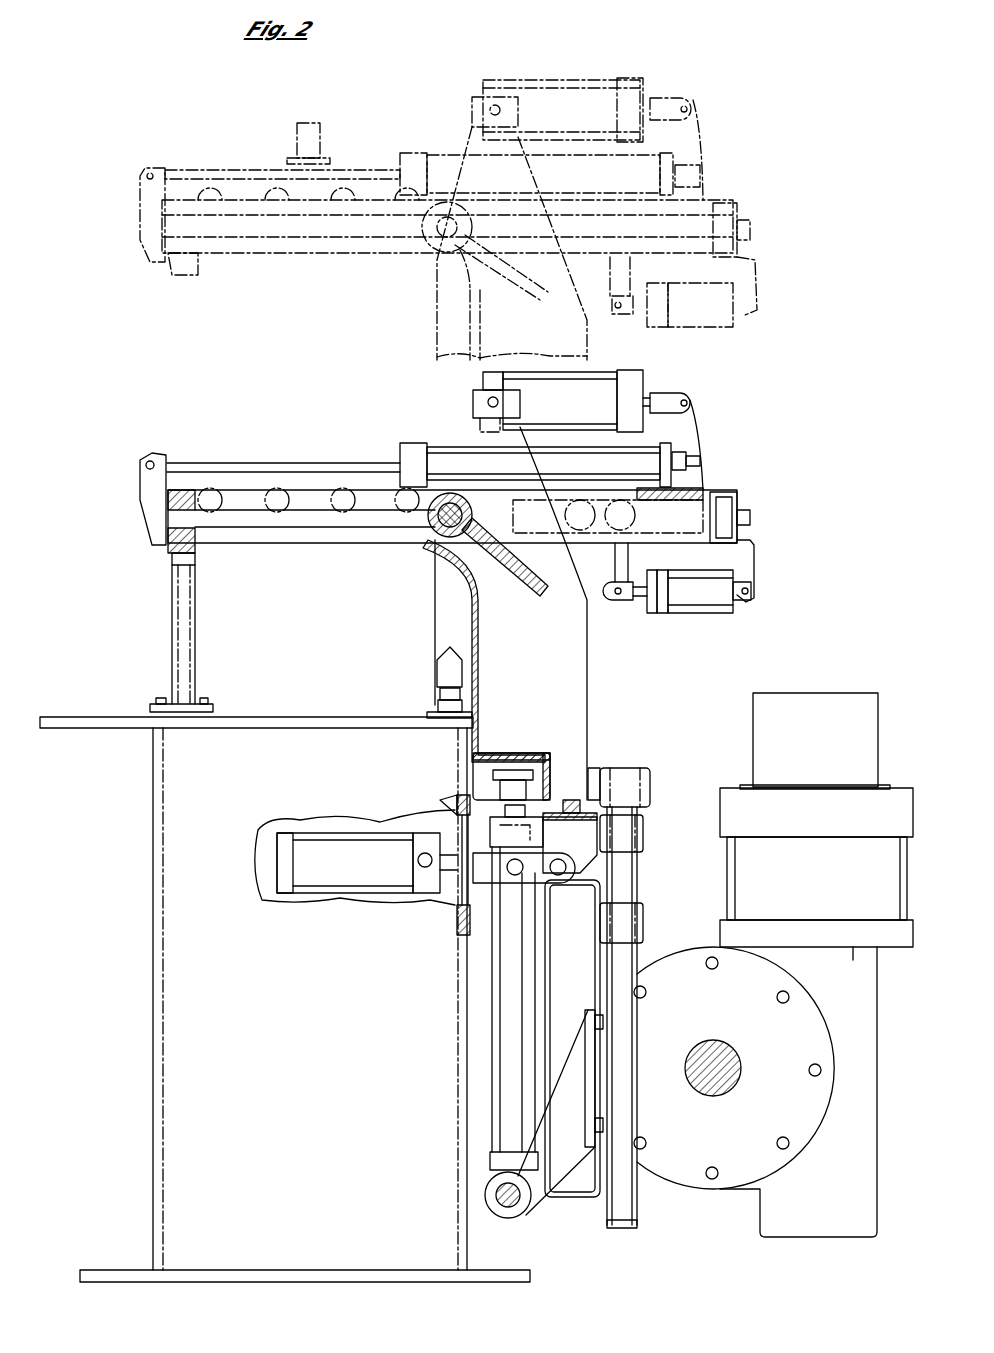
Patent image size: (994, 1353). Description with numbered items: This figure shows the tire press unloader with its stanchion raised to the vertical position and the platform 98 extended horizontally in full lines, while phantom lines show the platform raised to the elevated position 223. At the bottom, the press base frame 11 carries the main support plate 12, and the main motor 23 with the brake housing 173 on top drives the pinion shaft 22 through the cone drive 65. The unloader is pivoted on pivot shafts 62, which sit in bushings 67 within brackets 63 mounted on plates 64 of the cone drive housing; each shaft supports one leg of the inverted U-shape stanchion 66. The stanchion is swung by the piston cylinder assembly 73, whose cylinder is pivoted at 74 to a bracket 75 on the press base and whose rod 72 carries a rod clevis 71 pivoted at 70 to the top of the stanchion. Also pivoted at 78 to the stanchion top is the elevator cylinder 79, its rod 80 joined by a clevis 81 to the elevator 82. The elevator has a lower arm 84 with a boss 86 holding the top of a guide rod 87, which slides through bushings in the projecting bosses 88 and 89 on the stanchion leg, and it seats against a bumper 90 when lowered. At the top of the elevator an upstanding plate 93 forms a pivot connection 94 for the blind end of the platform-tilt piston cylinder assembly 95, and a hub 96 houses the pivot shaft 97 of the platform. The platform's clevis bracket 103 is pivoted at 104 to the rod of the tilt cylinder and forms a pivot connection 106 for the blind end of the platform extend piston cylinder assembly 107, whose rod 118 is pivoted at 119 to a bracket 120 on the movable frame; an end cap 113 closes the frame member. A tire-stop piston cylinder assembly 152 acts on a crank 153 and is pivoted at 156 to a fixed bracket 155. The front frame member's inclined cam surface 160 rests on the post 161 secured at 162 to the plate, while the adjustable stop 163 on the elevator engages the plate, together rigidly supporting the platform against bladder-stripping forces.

The elevated platform position 223 is at (410, 258).
The platform 98 is at (456, 564).
The platform-tilt piston cylinder assembly 95 is at (585, 372).
The platform extend piston cylinder assembly 107 is at (440, 447).
The pivot connection 94 is at (500, 402).
The pivot connection 104 is at (692, 395).
The clevis bracket 103 is at (700, 422).
The pivot connection 106 is at (700, 460).
The pivot connection 119 is at (150, 461).
The rod 118 is at (265, 462).
The bracket 120 is at (148, 497).
The end cap 113 is at (740, 500).
The hub 96 is at (435, 532).
The pivot shaft 97 is at (448, 548).
The fixed bracket 155 is at (753, 564).
The pivot 156 is at (755, 592).
The inclined cam surface 160 is at (175, 570).
The post 161 is at (180, 612).
The elevator 82 is at (476, 624).
The crank 153 is at (612, 575).
The upstanding plate 93 is at (587, 650).
The piston cylinder assembly 152 is at (698, 613).
The post securement 162 is at (208, 704).
The main support plate 12 is at (305, 717).
The adjustable stop 163 is at (445, 700).
The brake housing 173 is at (760, 712).
The bumper 90 is at (572, 800).
The arm 84 is at (595, 768).
The clevis 81 is at (495, 780).
The boss 86 is at (650, 783).
The rod clevis 71 is at (458, 806).
The rod 72 is at (463, 845).
The rod 80 is at (520, 843).
The projecting boss 88 is at (645, 835).
The main motor 23 is at (748, 878).
The piston cylinder assembly 73 is at (362, 893).
The pivot 74 is at (425, 893).
The pivot 78 is at (518, 883).
The pivot 70 is at (570, 878).
The projecting boss 89 is at (645, 920).
The bracket 75 is at (460, 915).
The base frame 11 is at (155, 955).
The stanchion 66 is at (572, 1038).
The elevator cylinder 79 is at (492, 1027).
The guide rod 87 is at (625, 1027).
The pinion shaft 22 is at (730, 1053).
The plate 64 is at (590, 1085).
The cone drive 65 is at (697, 1190).
The bushing 67 is at (500, 1210).
The pivot shaft 62 is at (512, 1207).
The bracket 63 is at (565, 1180).